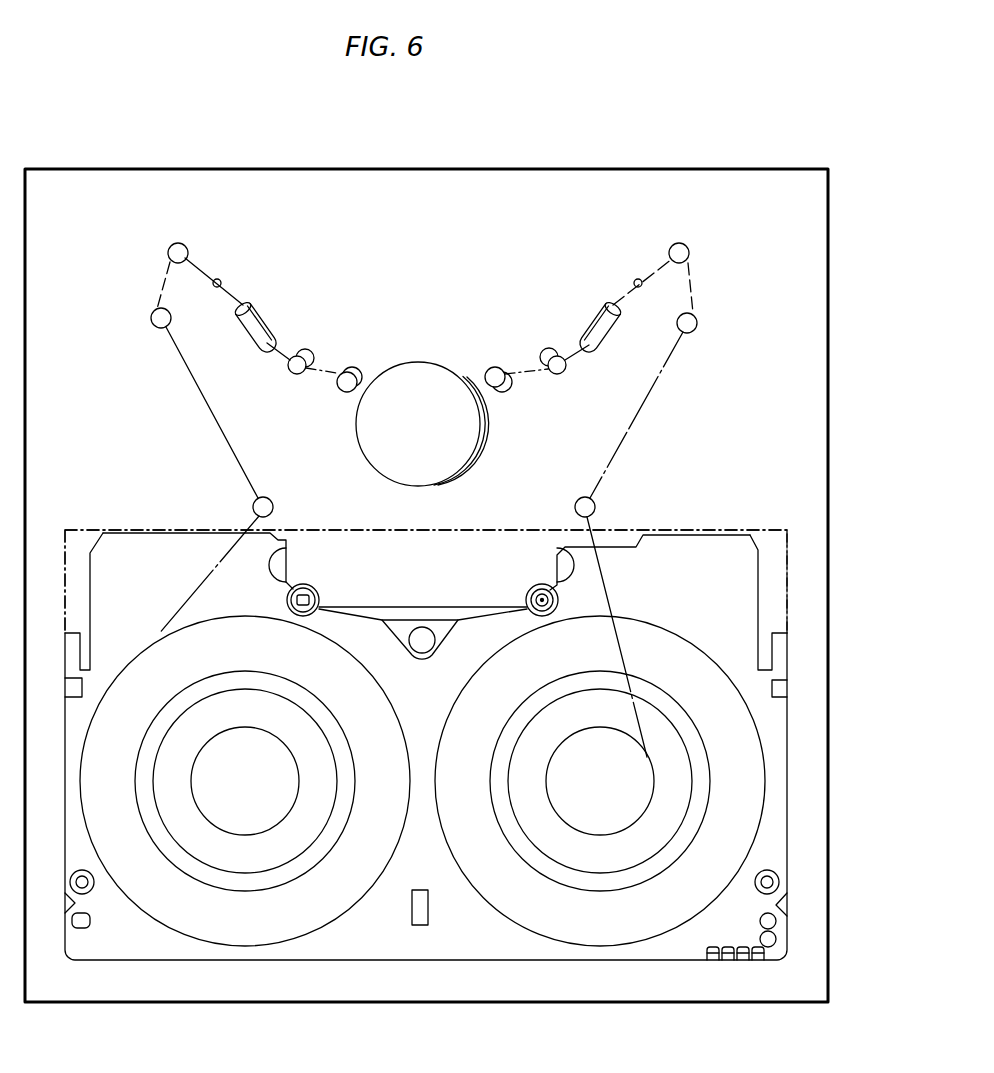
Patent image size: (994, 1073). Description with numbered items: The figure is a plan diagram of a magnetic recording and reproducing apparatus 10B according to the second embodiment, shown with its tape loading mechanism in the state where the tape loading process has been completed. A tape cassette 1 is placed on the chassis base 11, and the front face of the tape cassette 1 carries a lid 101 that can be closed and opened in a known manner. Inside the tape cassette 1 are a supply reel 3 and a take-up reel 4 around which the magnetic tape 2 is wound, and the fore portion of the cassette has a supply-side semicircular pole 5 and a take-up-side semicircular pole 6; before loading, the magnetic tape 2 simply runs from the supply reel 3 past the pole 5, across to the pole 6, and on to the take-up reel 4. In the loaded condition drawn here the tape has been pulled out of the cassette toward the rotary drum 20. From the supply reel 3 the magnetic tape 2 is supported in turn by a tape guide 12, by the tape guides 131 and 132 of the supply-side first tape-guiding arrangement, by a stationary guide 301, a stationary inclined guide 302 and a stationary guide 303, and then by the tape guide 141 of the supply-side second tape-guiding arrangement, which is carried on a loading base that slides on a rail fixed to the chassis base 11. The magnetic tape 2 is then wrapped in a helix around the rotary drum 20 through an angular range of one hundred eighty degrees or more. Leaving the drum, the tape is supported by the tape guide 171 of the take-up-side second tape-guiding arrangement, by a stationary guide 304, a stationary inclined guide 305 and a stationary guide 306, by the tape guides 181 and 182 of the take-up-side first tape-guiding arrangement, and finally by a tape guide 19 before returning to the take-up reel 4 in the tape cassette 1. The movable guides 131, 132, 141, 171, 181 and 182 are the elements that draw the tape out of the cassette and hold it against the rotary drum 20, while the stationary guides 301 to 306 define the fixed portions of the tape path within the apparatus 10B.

The magnetic recording and reproducing apparatus 10B is at (115, 169).
The chassis base 11 is at (795, 475).
The tape cassette 1 is at (426, 797).
The lid 101 is at (788, 605).
The magnetic tape 2 is at (645, 407).
The supply reel 3 is at (198, 941).
The take-up reel 4 is at (517, 941).
The supply-side semicircular pole 5 is at (276, 565).
The take-up-side semicircular pole 6 is at (572, 565).
The tape guide 12 is at (253, 505).
The tape guide 19 is at (595, 500).
The rotary drum 20 is at (418, 380).
The tape guide 131 is at (186, 245).
The tape guide 132 is at (152, 322).
The tape guide 141 is at (345, 372).
The tape guide 171 is at (493, 367).
The tape guide 181 is at (686, 248).
The tape guide 182 is at (697, 322).
The stationary guide 301 is at (222, 279).
The stationary inclined guide 302 is at (260, 318).
The stationary guide 303 is at (292, 374).
The stationary guide 304 is at (553, 374).
The stationary inclined guide 305 is at (598, 318).
The stationary guide 306 is at (638, 278).